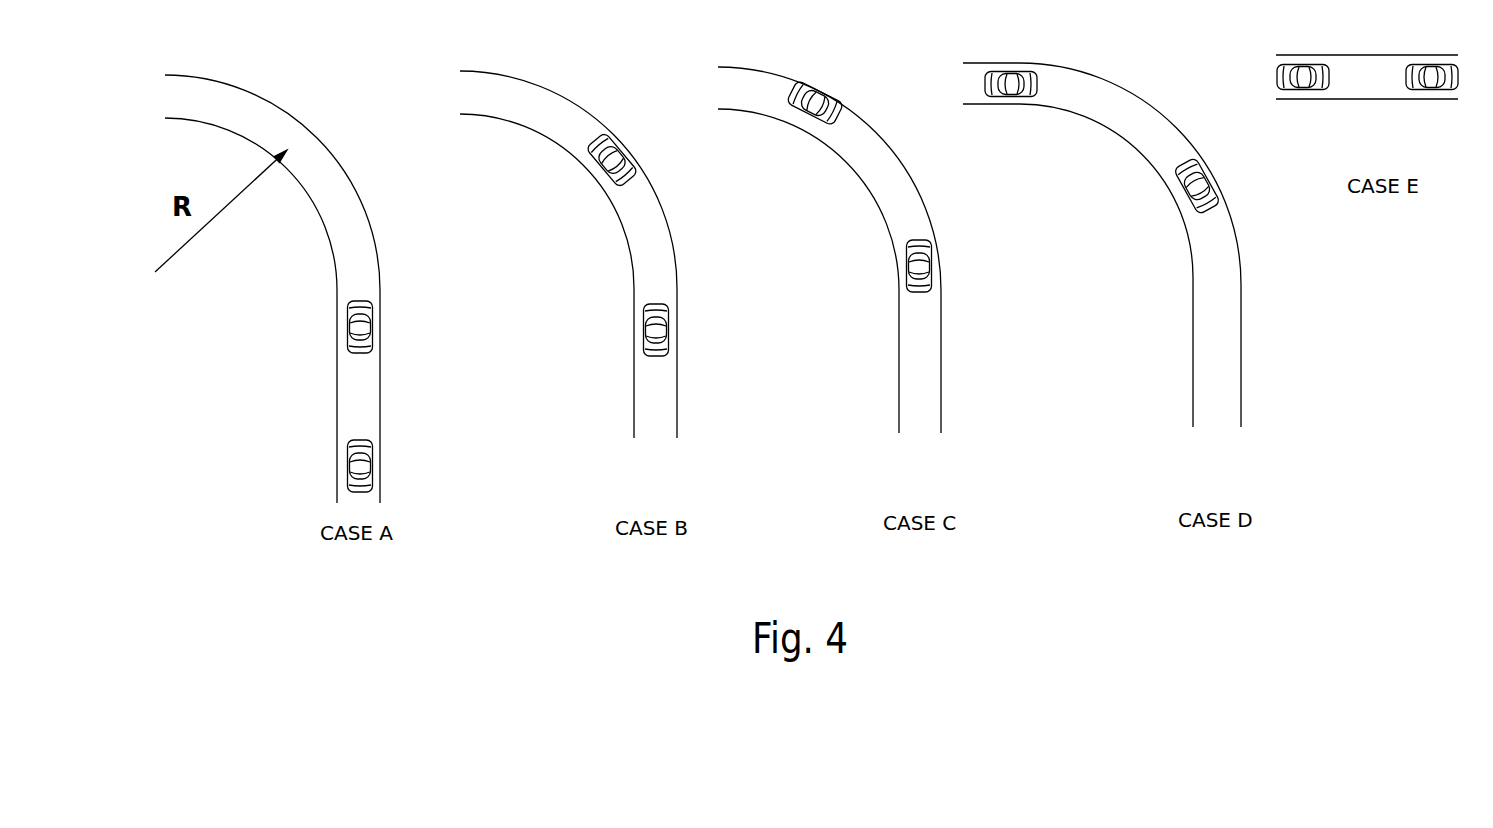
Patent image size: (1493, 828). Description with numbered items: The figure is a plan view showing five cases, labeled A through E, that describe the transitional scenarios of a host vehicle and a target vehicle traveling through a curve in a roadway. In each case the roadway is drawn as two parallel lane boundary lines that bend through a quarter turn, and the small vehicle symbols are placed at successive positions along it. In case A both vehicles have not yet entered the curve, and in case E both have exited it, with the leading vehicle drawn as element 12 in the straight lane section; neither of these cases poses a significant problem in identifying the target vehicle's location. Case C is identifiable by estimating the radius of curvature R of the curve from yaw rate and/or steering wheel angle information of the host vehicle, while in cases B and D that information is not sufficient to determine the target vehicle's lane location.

The preceding vehicle in same lane 12 is at (1298, 92).